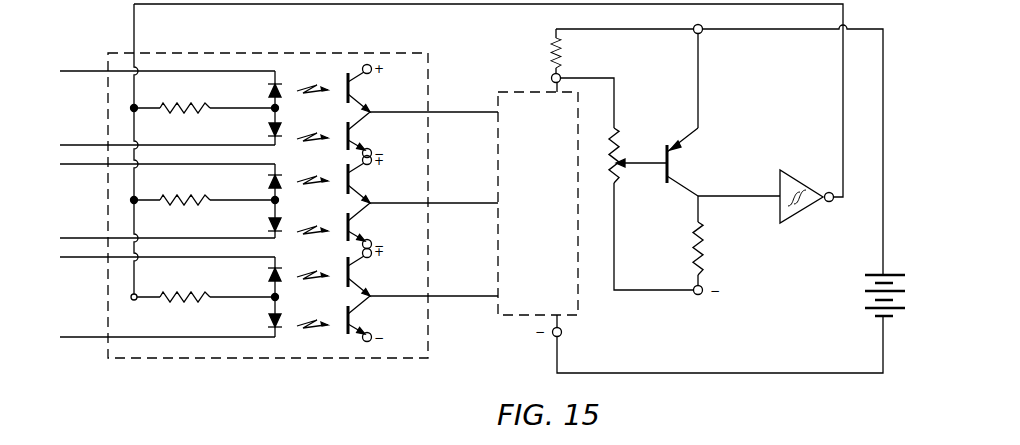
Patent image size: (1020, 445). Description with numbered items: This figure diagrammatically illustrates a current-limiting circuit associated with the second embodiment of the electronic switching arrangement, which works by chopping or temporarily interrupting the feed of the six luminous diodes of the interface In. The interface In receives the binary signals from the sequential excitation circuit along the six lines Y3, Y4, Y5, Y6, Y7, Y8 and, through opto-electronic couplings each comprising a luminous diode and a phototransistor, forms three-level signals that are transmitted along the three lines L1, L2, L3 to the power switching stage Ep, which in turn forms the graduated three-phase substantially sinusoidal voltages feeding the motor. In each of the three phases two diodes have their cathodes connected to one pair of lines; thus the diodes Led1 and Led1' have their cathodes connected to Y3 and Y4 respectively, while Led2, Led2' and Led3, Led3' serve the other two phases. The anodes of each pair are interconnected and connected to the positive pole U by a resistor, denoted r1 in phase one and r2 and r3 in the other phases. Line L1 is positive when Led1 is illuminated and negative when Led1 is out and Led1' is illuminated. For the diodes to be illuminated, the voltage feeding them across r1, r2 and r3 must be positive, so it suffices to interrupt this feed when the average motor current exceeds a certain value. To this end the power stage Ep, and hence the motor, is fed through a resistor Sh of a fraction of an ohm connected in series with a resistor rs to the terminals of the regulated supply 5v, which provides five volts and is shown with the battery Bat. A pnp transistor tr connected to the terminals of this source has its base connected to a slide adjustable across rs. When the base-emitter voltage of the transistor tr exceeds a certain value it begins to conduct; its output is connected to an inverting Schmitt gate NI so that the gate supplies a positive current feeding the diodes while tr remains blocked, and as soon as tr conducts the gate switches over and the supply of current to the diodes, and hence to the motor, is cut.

The line Y3 is at (155, 75).
The line Y4 is at (155, 149).
The line Y5 is at (155, 168).
The line Y6 is at (155, 242).
The line Y7 is at (155, 261).
The line Y8 is at (155, 341).
The resistor r1 is at (204, 120).
The resistor r2 is at (204, 214).
The resistor r3 is at (206, 310).
The luminous diode Led1 is at (247, 89).
The luminous diode Led1' is at (247, 126).
The luminous diode Led2 is at (247, 182).
The luminous diode Led2' is at (247, 219).
The luminous diode Led3 is at (247, 277).
The luminous diode Led3' is at (247, 317).
The interface In is at (190, 350).
The line L1 is at (434, 102).
The line L2 is at (434, 192).
The line L3 is at (434, 286).
The power switching stage Ep is at (538, 203).
The resistor Sh is at (569, 51).
The positive pole U is at (537, 80).
The resistor rs is at (627, 184).
The pnp transistor tr is at (661, 162).
The power supply 5v is at (789, 150).
The inverting Schmitt gate NI is at (807, 205).
The battery Bat is at (866, 295).